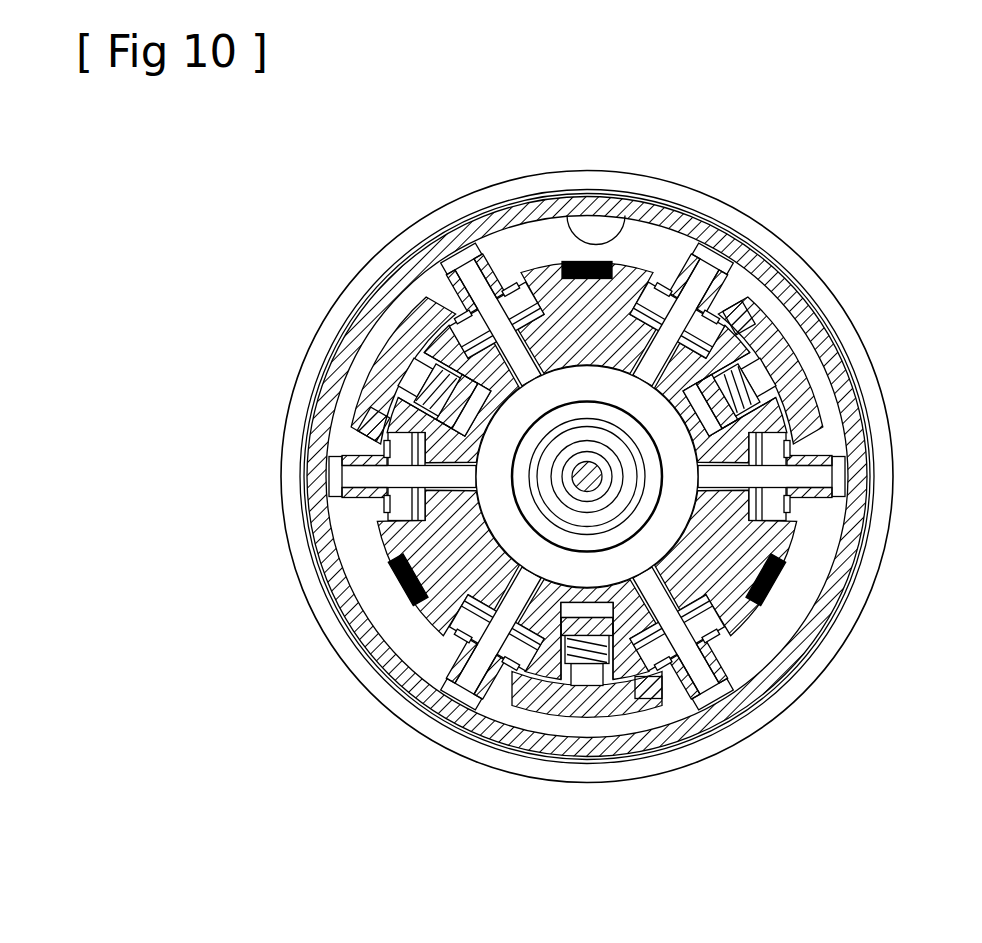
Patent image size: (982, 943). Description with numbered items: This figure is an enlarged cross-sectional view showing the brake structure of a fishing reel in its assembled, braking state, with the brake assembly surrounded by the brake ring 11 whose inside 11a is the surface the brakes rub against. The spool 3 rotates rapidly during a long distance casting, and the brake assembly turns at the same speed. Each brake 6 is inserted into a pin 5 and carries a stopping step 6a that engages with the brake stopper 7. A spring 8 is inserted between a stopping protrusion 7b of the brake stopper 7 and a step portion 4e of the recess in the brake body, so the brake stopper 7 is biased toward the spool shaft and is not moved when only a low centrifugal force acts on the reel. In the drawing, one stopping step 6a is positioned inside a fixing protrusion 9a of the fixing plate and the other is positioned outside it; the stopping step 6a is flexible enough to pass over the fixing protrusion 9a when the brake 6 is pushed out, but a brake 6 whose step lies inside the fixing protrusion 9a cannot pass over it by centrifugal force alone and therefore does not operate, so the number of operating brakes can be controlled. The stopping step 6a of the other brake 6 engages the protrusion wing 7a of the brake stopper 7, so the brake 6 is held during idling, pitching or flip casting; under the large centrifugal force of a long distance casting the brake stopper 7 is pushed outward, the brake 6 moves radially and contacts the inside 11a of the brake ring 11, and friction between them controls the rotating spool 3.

The spool 3 is at (590, 170).
The pin 5 is at (457, 265).
The brake ring 11 is at (502, 218).
The inside of brake ring 11a is at (557, 215).
The brake 6 is at (725, 275).
The stopping step 6a is at (667, 282).
The fixing protrusion 9a is at (372, 505).
The brake stopper 7 is at (445, 395).
The protrusion wing 7a is at (432, 305).
The stopping protrusion 7b is at (447, 363).
The spring 8 is at (387, 415).
The step portion 4e is at (427, 402).